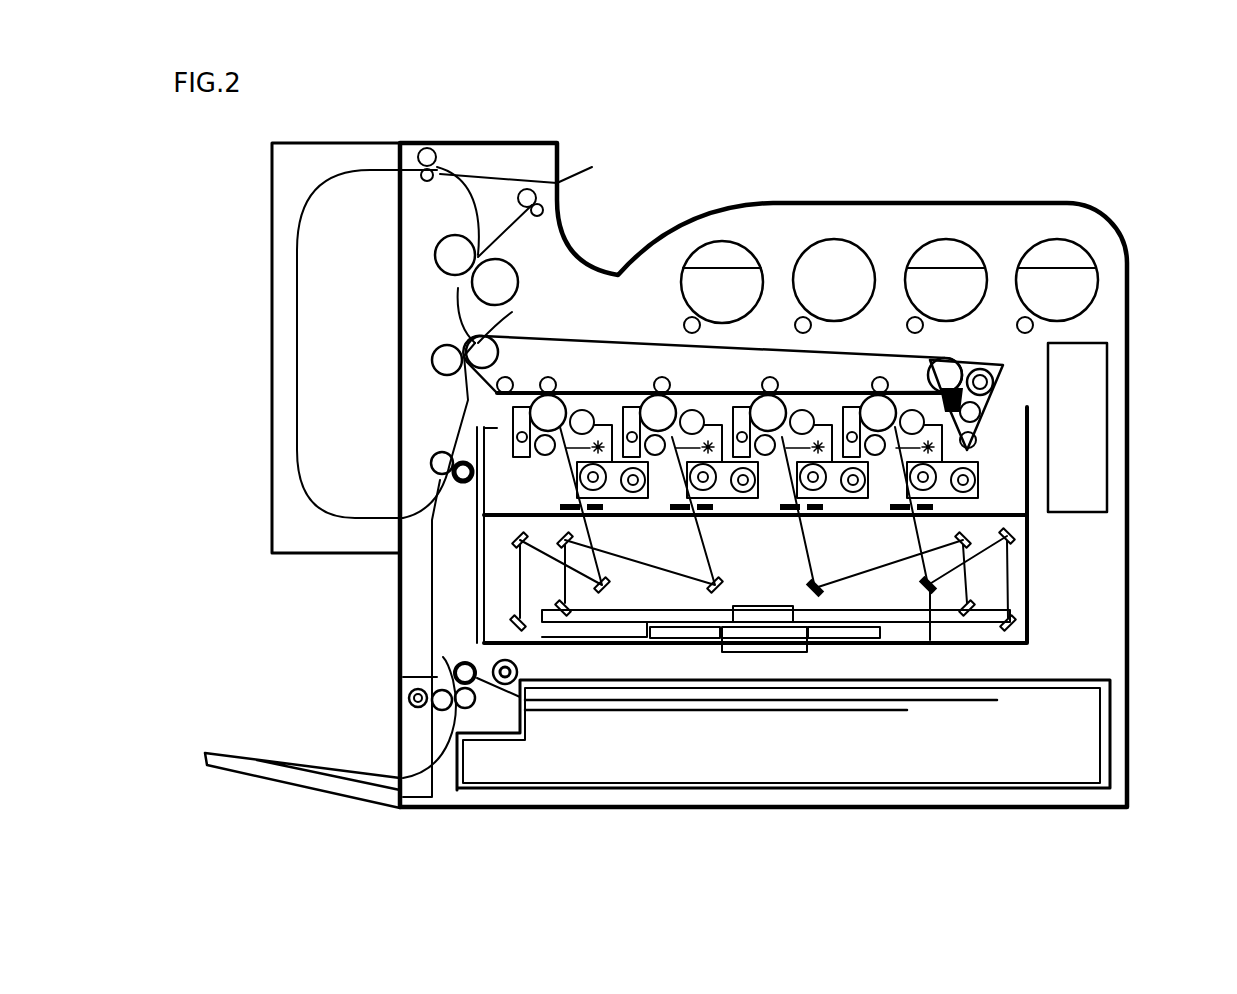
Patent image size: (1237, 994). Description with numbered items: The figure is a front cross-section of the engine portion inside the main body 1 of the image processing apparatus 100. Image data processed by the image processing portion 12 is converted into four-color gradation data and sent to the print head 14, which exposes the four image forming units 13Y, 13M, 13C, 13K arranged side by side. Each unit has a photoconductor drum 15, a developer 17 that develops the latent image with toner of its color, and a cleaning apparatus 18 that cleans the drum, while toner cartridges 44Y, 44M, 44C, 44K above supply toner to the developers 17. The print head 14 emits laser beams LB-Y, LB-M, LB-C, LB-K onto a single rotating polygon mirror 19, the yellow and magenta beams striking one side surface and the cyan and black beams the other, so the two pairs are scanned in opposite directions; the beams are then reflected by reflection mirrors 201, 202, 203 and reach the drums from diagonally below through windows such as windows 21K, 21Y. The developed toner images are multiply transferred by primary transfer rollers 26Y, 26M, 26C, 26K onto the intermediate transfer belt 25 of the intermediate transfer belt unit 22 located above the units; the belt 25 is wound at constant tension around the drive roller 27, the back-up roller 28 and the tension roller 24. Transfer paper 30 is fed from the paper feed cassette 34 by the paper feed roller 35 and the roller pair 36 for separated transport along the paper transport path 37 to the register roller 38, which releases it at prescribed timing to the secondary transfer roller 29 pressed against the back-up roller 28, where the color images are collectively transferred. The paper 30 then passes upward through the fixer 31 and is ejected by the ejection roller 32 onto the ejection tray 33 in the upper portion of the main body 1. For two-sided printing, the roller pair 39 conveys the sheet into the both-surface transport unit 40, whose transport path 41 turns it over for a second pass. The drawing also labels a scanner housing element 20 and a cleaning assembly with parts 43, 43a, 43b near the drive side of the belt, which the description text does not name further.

The main body 1 is at (1120, 232).
The image processing apparatus 100 is at (1140, 162).
The image processing portion 12 is at (1097, 406).
The image forming unit 13K is at (564, 474).
The image forming unit 13C is at (722, 498).
The image forming unit 13M is at (832, 498).
The image forming unit 13Y is at (983, 487).
The print head 14 is at (1037, 582).
The photoconductor drum 15 is at (928, 375).
The developer 17 is at (983, 470).
The cleaning apparatus 18 is at (862, 386).
The rotating polygon mirror 19 is at (768, 607).
The optical scanner unit 20 is at (1130, 585).
The window 21K is at (602, 503).
The window 21Y is at (899, 533).
The intermediate transfer belt unit 22 is at (595, 340).
The tension roller 24 is at (508, 379).
The intermediate transfer belt 25 is at (617, 352).
The primary transfer roller 26K is at (548, 377).
The primary transfer roller 26C is at (662, 377).
The primary transfer roller 26M is at (770, 377).
The primary transfer roller 26Y is at (880, 377).
The drive roller 27 is at (957, 367).
The back-up roller 28 is at (512, 312).
The secondary transfer roller 29 is at (432, 365).
The transfer paper 30 is at (817, 682).
The fixer 31 is at (434, 259).
The ejection roller 32 is at (527, 189).
The ejection tray 33 is at (778, 201).
The paper feed cassette 34 is at (1125, 735).
The paper feed roller 35 is at (465, 662).
The roller pair for separated paper transport 36 is at (443, 657).
The paper transport path 37 is at (432, 593).
The register roller 38 is at (431, 463).
The roller pair for paper transport 39 is at (437, 158).
The both-surface transport unit 40 is at (270, 344).
The transport path 41 is at (297, 250).
The belt cleaning device 43 is at (1008, 383).
The cleaning roller 43a is at (1002, 357).
The toner conveying screw 43b is at (978, 436).
The toner cartridge 44K is at (722, 240).
The toner cartridge 44C is at (835, 238).
The toner cartridge 44M is at (946, 238).
The toner cartridge 44Y is at (1055, 238).
The reflection mirror 201 is at (1032, 630).
The reflection mirror 202 is at (1028, 533).
The reflection mirror 203 is at (940, 663).
The laser beam LB-K is at (543, 640).
The laser beam LB-C is at (620, 642).
The laser beam LB-M is at (985, 640).
The laser beam LB-Y is at (1030, 607).